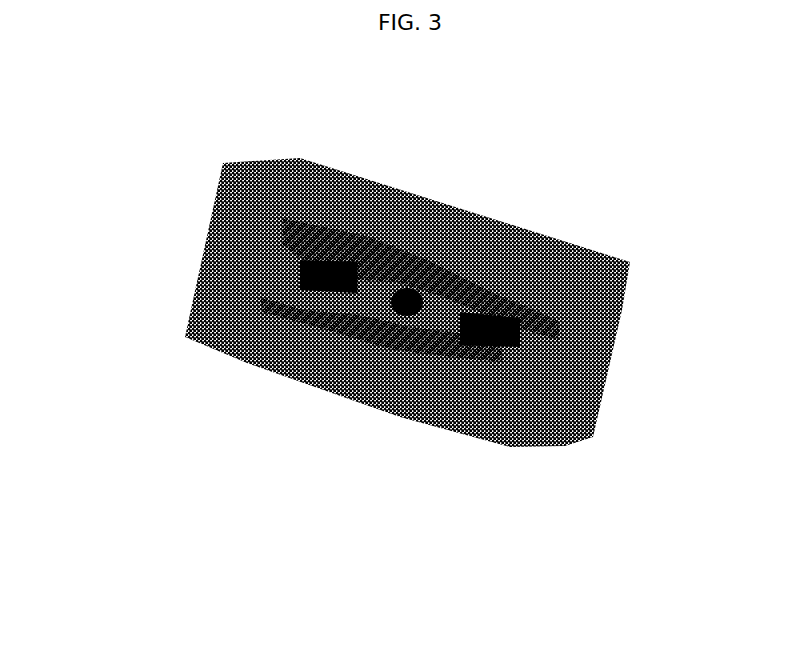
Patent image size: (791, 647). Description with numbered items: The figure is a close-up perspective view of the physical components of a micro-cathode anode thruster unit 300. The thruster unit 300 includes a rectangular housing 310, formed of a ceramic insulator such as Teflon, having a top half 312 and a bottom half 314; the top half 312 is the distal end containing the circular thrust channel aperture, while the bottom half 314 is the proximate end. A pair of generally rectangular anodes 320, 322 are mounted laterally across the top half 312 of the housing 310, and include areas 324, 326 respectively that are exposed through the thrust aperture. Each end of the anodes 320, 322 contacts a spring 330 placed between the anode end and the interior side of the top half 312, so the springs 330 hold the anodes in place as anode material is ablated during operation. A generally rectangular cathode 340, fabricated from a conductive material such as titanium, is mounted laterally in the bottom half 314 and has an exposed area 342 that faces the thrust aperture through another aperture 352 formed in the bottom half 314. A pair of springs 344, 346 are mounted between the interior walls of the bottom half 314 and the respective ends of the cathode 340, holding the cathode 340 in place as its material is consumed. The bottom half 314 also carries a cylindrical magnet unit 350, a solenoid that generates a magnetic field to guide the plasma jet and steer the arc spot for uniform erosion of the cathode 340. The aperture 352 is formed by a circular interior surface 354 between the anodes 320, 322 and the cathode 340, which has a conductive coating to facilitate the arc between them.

The micro-cathode anode thruster unit 300 is at (222, 130).
The rectangular housing 310 is at (573, 432).
The top half 312 is at (390, 403).
The bottom half 314 is at (305, 300).
The anode 320 is at (353, 240).
The anode 322 is at (332, 325).
The exposed area 324 is at (427, 260).
The exposed area 326 is at (383, 325).
The springs 330 is at (262, 223).
The cathode 340 is at (500, 307).
The exposed area 342 is at (478, 258).
The spring 344 is at (282, 256).
The spring 346 is at (568, 343).
The cylindrical magnet unit 350 is at (480, 257).
The aperture 352 is at (433, 365).
The circular interior surface 354 is at (387, 250).